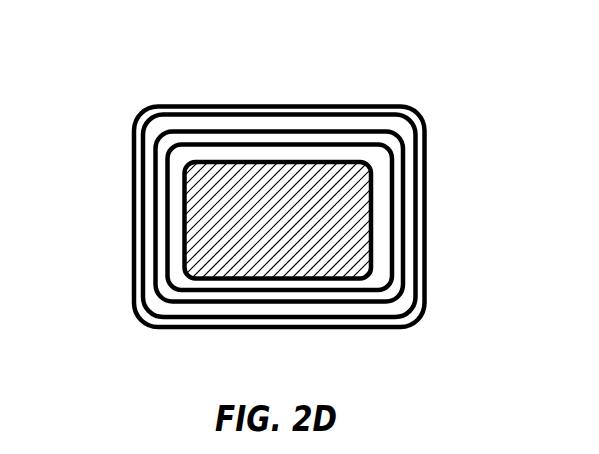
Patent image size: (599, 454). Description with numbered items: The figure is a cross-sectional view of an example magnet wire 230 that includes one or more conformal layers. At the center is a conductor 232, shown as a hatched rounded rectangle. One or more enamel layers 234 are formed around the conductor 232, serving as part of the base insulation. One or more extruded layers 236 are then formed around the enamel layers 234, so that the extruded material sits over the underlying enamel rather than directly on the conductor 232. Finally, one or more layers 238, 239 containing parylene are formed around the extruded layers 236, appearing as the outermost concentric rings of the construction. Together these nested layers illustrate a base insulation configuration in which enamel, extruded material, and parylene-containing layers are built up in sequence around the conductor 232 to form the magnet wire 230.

The magnet wire 230 is at (230, 42).
The conductor 232 is at (301, 181).
The enamel layers 234 is at (385, 230).
The extruded layers 236 is at (151, 300).
The layer containing parylene 238 is at (146, 113).
The layer containing parylene 239 is at (435, 191).